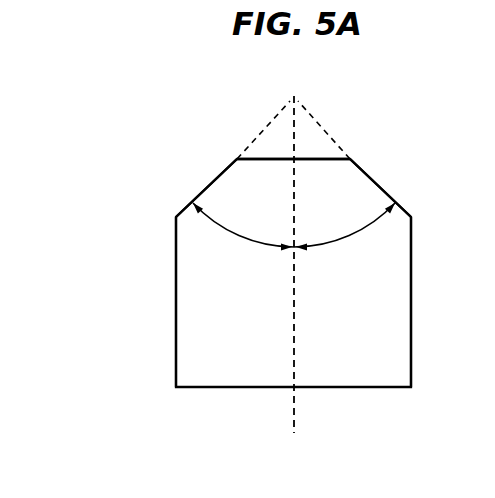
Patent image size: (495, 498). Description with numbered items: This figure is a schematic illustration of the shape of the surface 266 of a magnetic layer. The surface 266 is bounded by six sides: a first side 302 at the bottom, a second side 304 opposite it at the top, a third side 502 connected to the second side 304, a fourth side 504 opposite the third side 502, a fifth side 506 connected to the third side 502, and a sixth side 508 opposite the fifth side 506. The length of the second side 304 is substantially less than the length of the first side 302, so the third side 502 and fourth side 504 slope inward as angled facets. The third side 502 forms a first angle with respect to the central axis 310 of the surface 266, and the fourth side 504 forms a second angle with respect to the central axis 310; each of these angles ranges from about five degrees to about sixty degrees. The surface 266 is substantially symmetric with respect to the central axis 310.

The surface 266 is at (184, 114).
The first side 302 is at (350, 388).
The second side 304 is at (315, 158).
The central axis 310 is at (293, 128).
The third side 502 is at (213, 181).
The fourth side 504 is at (380, 188).
The fifth side 506 is at (176, 295).
The sixth side 508 is at (412, 290).